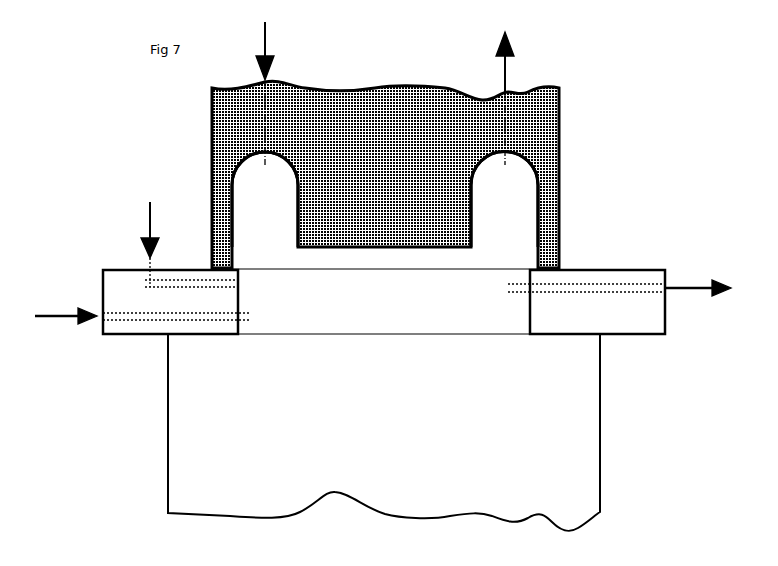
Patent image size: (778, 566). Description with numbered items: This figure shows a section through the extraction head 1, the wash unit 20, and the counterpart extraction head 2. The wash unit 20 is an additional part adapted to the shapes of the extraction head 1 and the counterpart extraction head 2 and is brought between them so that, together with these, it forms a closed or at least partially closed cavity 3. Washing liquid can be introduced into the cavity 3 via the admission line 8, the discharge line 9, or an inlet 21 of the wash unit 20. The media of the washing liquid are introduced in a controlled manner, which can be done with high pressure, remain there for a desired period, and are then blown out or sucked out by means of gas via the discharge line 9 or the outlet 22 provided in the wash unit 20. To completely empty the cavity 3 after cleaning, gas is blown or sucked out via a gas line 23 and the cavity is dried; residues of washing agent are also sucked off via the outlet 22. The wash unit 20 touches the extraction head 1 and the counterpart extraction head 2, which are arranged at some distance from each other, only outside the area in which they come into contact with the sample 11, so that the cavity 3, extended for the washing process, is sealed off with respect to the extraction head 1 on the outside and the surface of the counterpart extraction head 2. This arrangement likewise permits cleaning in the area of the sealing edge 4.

The extraction head 1 is at (380, 167).
The counterpart extraction head 2 is at (400, 366).
The cavity 3 is at (515, 218).
The sealing edge 4 is at (560, 268).
The admission line 8 is at (255, 92).
The discharge line 9 is at (512, 72).
The sample 11 is at (298, 266).
The wash unit 20 is at (110, 278).
The inlet 21 is at (60, 320).
The outlet 22 is at (704, 291).
The gas line 23 is at (148, 220).